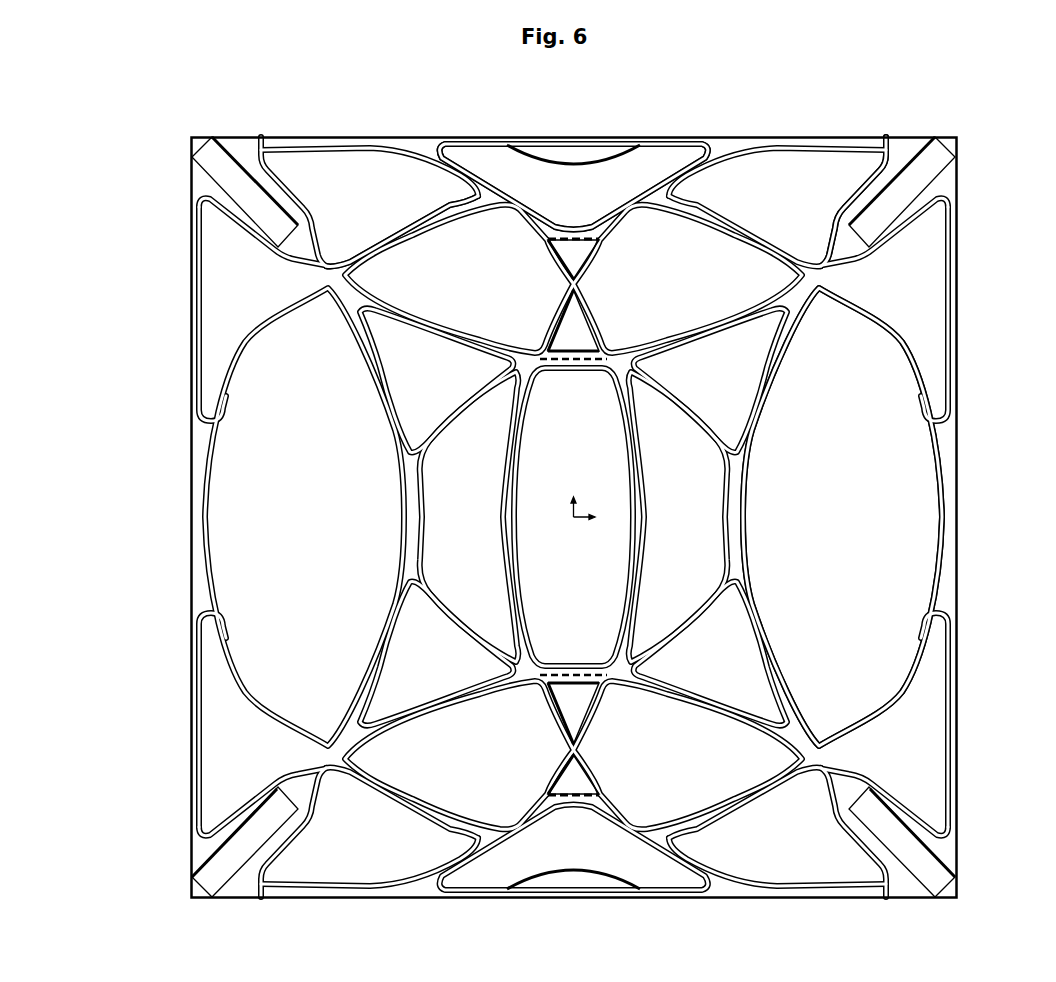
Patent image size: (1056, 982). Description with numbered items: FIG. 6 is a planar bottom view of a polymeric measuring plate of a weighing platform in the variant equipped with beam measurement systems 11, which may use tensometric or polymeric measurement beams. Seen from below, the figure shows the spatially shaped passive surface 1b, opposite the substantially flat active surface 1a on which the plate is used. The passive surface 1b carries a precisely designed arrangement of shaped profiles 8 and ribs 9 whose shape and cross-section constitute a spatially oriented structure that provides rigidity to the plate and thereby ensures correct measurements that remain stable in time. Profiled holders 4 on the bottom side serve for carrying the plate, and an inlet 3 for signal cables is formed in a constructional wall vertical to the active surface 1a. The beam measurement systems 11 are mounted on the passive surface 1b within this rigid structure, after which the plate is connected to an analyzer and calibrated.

The active surface 1a is at (897, 337).
The passive surface 1b is at (903, 148).
The inlet 3 is at (190, 517).
The profiled holder 4 is at (490, 163).
The shaped profile 8 is at (573, 228).
The rib 9 is at (375, 228).
The beam measurement system 11 is at (878, 212).